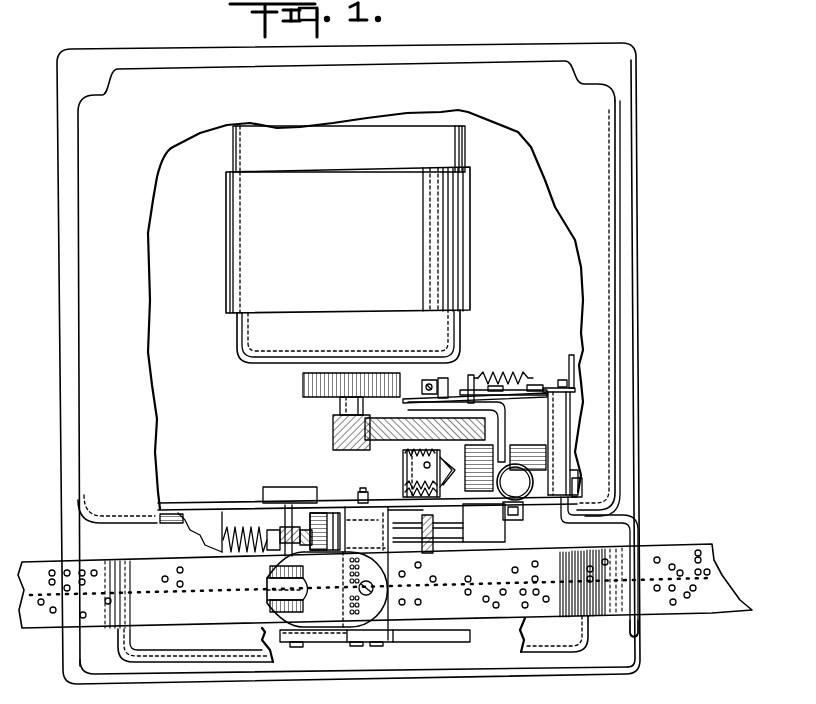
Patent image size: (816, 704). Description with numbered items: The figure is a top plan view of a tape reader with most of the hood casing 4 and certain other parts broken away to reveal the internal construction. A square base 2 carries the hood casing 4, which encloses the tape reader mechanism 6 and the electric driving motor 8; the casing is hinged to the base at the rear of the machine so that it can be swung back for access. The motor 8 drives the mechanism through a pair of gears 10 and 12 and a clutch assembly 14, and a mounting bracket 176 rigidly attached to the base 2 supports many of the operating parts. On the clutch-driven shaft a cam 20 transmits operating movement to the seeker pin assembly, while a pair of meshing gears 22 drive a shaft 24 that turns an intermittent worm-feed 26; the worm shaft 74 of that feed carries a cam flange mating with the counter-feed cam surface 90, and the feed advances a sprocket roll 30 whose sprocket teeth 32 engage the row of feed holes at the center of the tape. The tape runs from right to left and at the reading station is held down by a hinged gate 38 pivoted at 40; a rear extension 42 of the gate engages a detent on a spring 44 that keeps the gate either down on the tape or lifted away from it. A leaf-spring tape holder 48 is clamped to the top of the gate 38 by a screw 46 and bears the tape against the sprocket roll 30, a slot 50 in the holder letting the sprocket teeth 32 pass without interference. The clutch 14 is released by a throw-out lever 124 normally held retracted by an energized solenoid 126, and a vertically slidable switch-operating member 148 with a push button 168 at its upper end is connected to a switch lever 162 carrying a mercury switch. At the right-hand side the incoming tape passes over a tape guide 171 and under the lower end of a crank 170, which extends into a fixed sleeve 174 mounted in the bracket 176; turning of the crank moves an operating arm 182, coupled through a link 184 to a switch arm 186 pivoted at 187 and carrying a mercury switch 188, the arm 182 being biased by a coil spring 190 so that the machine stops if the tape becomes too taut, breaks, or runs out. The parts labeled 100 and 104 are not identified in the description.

The base 2 is at (60, 290).
The hood casing 4 is at (90, 168).
The tape reader mechanism 6 is at (247, 490).
The electric driving motor 8 is at (252, 232).
The gear 10 is at (333, 421).
The gear 12 is at (397, 427).
The clutch assembly 14 is at (398, 455).
The cam 20 is at (462, 600).
The pair of meshing gears 22 is at (442, 545).
The shaft 24 is at (425, 530).
The intermittent worm-feed 26 is at (280, 522).
The sprocket roll 30 is at (272, 617).
The sprocket teeth 32 is at (290, 597).
The hinged gate 38 is at (370, 629).
The pivot 40 is at (342, 531).
The rear extension 42 is at (358, 493).
The spring 44 is at (365, 488).
The screw 46 is at (367, 598).
The leaf-spring tape holder 48 is at (328, 617).
The slot 50 is at (290, 585).
The worm shaft 74 is at (253, 555).
The counter-feed cam surface 90 is at (312, 527).
The bracket 100 is at (203, 527).
The compression spring 104 is at (243, 557).
The throw-out lever 124 is at (460, 466).
The solenoid 126 is at (522, 449).
The switch-operating member 148 is at (484, 525).
The switch lever 162 is at (580, 470).
The push button 168 is at (511, 488).
The crank 170 is at (625, 525).
The tape guide 171 is at (643, 620).
The fixed sleeve 174 is at (560, 420).
The mounting bracket 176 is at (582, 484).
The operating arm 182 is at (571, 374).
The link 184 is at (505, 394).
The switch arm 186 is at (448, 392).
The pivot 187 is at (423, 381).
The mercury switch 188 is at (458, 396).
The coil spring 190 is at (513, 374).